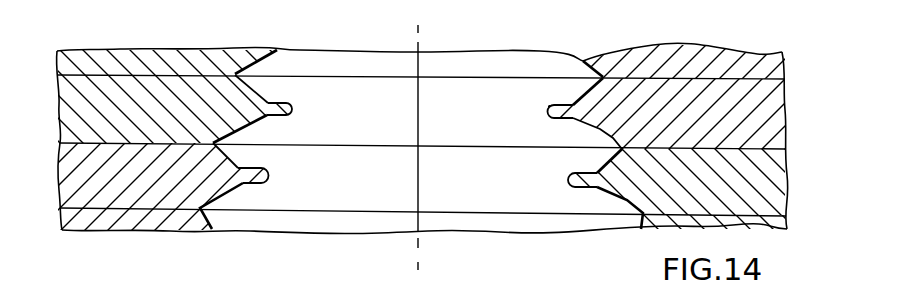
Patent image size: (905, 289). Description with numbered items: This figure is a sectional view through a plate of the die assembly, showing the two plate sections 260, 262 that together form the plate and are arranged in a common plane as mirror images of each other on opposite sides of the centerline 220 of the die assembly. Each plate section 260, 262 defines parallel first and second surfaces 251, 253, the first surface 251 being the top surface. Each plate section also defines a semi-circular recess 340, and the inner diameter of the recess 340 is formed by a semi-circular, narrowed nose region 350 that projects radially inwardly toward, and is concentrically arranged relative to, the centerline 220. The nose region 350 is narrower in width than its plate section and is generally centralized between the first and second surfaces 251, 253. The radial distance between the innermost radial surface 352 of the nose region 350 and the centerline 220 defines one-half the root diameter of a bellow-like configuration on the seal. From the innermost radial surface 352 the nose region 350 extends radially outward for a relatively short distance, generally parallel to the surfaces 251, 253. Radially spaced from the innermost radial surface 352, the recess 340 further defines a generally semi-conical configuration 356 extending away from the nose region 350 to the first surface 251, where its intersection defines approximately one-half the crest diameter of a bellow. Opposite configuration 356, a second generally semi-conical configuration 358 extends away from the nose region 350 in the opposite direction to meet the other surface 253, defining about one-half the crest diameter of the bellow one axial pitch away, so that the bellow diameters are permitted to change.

The centerline 220 is at (420, 42).
The first surface 251 is at (83, 50).
The second surface 253 is at (63, 106).
The plate section 260 is at (266, 144).
The plate section 262 is at (693, 163).
The semi-circular recess 340 is at (278, 115).
The nose region 350 is at (280, 116).
The innermost radial surface 352 is at (292, 113).
The semi-conical configuration 356 is at (287, 30).
The semi-conical configuration 358 is at (259, 132).